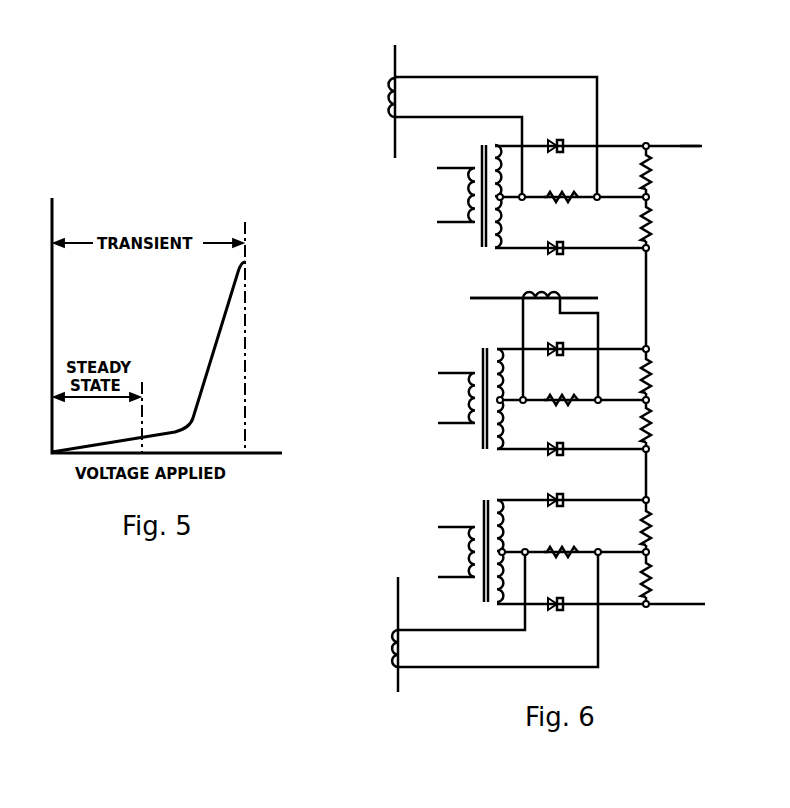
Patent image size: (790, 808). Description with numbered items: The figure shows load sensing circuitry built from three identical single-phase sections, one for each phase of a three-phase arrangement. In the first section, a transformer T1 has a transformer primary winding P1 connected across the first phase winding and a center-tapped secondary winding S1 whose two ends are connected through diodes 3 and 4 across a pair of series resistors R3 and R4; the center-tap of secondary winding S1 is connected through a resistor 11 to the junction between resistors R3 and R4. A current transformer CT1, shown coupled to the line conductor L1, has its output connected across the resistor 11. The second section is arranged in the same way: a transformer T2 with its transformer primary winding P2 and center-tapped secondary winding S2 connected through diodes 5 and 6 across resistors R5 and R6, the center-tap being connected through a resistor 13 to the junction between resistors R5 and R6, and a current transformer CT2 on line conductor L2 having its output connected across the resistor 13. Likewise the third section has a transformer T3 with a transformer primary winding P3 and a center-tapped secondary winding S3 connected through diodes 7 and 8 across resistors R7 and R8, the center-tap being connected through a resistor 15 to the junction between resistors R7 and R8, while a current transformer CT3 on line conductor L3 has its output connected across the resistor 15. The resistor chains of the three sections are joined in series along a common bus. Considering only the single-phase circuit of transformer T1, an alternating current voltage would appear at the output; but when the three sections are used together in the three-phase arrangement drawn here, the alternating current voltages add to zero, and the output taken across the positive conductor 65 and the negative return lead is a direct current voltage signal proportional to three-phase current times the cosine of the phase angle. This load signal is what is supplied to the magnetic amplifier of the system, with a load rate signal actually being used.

The line conductor L1 is at (389, 65).
The current transformer CT1 is at (388, 97).
The transformer T1 is at (480, 160).
The transformer primary winding P1 is at (470, 201).
The secondary winding S1 is at (501, 217).
The diode 3 is at (552, 131).
The resistor 11 is at (553, 189).
The diode 4 is at (553, 243).
The conductor 65 is at (693, 145).
The resistor R3 is at (652, 172).
The resistor R4 is at (652, 222).
The current transformer CT2 is at (537, 291).
The line conductor L2 is at (575, 298).
The transformer T2 is at (480, 363).
The transformer primary winding P2 is at (473, 405).
The secondary winding S2 is at (497, 423).
The diode 5 is at (555, 333).
The resistor 13 is at (554, 392).
The diode 6 is at (555, 433).
The resistor R5 is at (652, 374).
The resistor R6 is at (652, 425).
The transformer T3 is at (481, 515).
The transformer primary winding P3 is at (473, 557).
The secondary winding S3 is at (502, 540).
The diode 7 is at (555, 485).
The resistor 15 is at (553, 544).
The diode 8 is at (555, 588).
The resistor R7 is at (652, 526).
The resistor R8 is at (652, 577).
The current transformer CT3 is at (390, 649).
The line conductor L3 is at (395, 685).